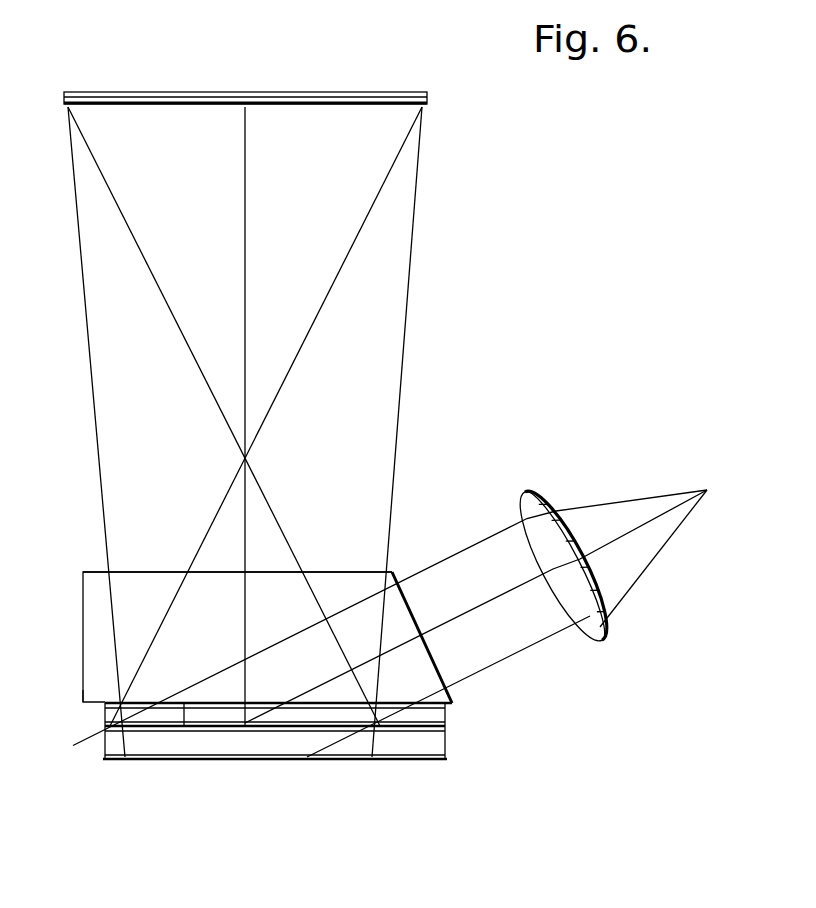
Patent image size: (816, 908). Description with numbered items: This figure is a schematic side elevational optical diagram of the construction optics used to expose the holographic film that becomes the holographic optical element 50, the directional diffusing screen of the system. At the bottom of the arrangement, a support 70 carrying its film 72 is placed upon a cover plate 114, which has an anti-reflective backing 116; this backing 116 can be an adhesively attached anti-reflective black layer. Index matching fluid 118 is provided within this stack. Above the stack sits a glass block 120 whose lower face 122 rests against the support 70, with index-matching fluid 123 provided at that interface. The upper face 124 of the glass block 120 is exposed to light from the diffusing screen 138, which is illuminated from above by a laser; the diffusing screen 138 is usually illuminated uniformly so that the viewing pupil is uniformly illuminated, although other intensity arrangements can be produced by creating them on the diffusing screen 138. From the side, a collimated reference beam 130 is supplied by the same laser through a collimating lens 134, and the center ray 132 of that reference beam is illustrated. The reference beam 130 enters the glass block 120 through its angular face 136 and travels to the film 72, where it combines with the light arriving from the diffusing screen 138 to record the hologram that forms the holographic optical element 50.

The holographic optical element 50 is at (272, 747).
The support 70 is at (447, 714).
The film 72 is at (447, 724).
The cover plate 114 is at (437, 749).
The anti-reflective backing 116 is at (310, 759).
The index matching fluid 118 is at (447, 734).
The glass block 120 is at (240, 615).
The lower face 122 is at (181, 729).
The index-matching fluid 123 is at (103, 702).
The upper face 124 is at (88, 570).
The collimated reference beam 130 is at (488, 534).
The center ray 132 is at (487, 599).
The collimating lens 134 is at (532, 492).
The angular face 136 is at (398, 574).
The diffusing screen 138 is at (424, 108).